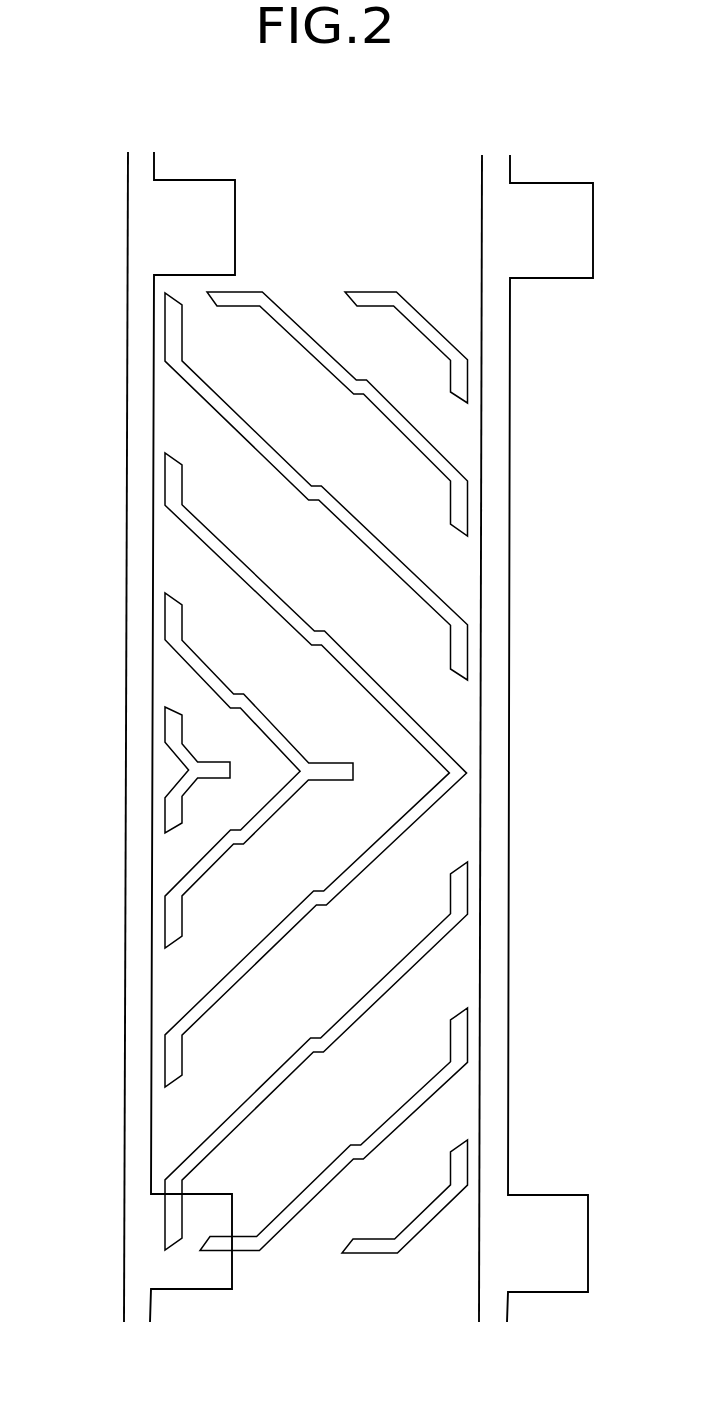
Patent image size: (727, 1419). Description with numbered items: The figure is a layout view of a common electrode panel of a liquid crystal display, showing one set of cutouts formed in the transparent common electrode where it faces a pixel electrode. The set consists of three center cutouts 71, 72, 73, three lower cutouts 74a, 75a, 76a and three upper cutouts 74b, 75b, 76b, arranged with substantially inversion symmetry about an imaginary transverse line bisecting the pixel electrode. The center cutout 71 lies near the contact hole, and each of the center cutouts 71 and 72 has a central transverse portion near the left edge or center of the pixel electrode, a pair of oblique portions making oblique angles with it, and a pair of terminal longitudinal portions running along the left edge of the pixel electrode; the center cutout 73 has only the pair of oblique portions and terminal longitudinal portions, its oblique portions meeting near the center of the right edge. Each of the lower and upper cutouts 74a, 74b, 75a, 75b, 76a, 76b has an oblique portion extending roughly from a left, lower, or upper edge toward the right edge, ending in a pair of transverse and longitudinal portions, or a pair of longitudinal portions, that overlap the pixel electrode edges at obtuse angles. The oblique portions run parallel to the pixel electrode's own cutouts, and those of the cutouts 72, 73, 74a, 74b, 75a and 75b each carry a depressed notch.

The center cutout 71 is at (152, 807).
The center cutout 72 is at (207, 693).
The center cutout 73 is at (212, 562).
The lower cutout 74a is at (408, 985).
The upper cutout 74b is at (424, 573).
The lower cutout 75a is at (413, 1123).
The upper cutout 75b is at (418, 422).
The lower cutout 76a is at (366, 1262).
The upper cutout 76b is at (449, 323).